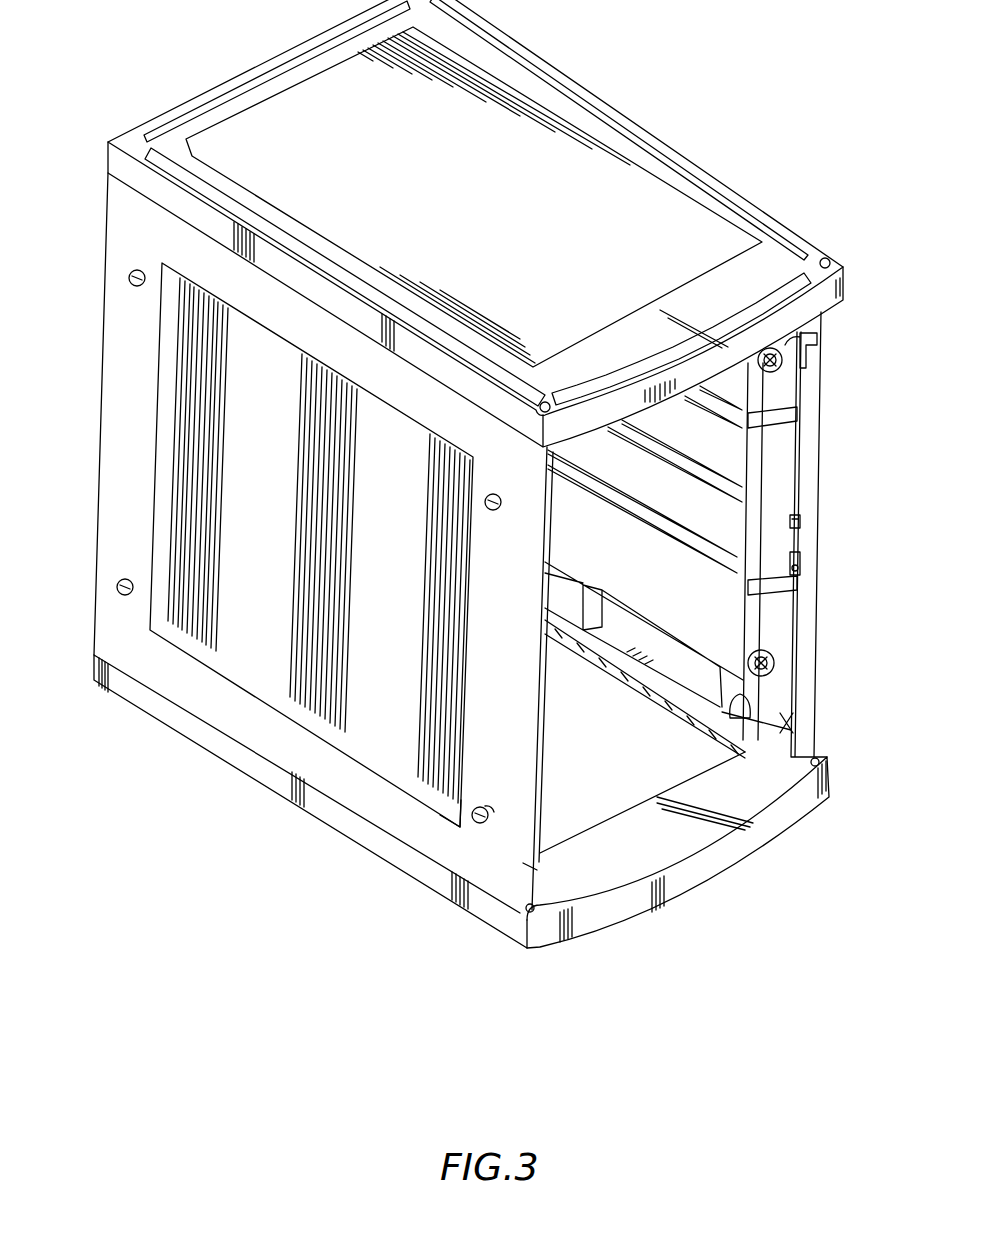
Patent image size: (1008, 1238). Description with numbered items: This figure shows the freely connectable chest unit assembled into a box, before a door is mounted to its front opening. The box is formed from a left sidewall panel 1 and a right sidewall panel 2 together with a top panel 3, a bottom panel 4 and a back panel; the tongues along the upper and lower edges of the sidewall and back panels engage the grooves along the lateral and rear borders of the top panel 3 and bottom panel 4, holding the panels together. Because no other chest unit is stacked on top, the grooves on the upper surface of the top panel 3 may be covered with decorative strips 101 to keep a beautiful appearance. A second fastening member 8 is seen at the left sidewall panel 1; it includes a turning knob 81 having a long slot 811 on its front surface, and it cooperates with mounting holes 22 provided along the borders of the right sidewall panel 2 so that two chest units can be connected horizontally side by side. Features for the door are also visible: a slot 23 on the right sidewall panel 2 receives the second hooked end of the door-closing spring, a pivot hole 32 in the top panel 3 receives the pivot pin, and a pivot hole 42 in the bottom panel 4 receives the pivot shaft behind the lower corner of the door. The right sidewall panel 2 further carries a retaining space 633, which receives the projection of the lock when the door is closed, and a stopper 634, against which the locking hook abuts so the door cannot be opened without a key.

The left sidewall panel 1 is at (230, 703).
The decorative strips 101 is at (207, 197).
The right sidewall panel 2 is at (812, 490).
The mounting holes 22 is at (781, 371).
The slot 23 is at (809, 336).
The top panel 3 is at (540, 147).
The pivot hole 32 is at (831, 260).
The bottom panel 4 is at (367, 835).
The pivot hole 42 is at (821, 757).
The retaining space 633 is at (801, 570).
The stopper 634 is at (801, 520).
The second fastening member 8 is at (463, 833).
The turning knob 81 is at (483, 823).
The long slot 811 is at (490, 807).